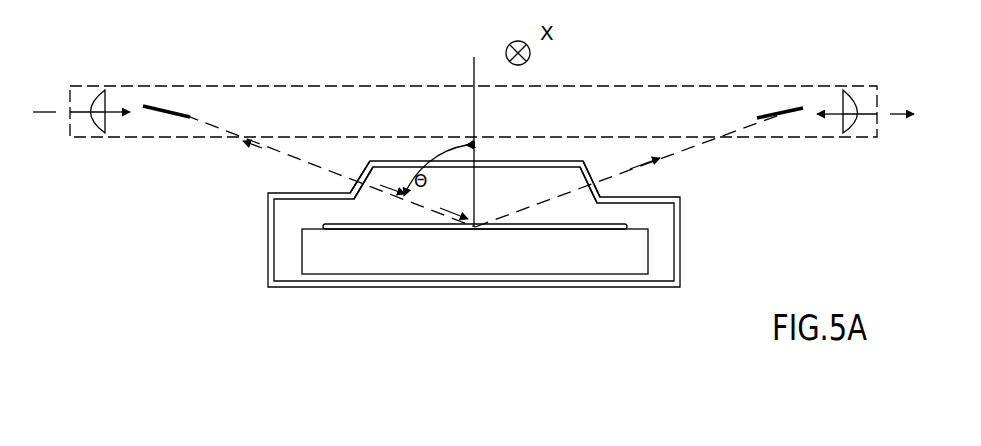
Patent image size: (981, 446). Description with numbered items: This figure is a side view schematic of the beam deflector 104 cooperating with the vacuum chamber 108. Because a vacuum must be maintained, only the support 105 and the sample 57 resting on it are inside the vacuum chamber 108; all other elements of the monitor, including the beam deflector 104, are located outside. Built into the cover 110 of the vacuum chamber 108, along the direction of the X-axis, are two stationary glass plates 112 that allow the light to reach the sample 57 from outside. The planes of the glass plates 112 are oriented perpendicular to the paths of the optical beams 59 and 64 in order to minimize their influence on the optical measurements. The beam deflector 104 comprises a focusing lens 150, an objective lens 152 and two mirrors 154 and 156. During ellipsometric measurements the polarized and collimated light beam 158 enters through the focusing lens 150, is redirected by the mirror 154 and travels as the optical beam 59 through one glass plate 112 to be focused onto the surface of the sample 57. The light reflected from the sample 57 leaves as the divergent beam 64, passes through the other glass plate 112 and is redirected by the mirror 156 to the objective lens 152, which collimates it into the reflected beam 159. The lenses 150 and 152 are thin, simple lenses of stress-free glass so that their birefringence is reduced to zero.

The sample 57 is at (550, 230).
The optical beam 59 is at (281, 151).
The divergent beam 64 is at (700, 143).
The beam deflector 104 is at (292, 100).
The support 105 is at (400, 263).
The vacuum chamber 108 is at (660, 236).
The cover 110 is at (653, 193).
The stationary glass plates 112 is at (356, 171).
The focusing lens 150 is at (100, 92).
The objective lens 152 is at (843, 100).
The mirror 154 is at (190, 113).
The mirror 156 is at (797, 110).
The polarized and collimated light beam 158 is at (41, 112).
The reflected beam 159 is at (903, 112).